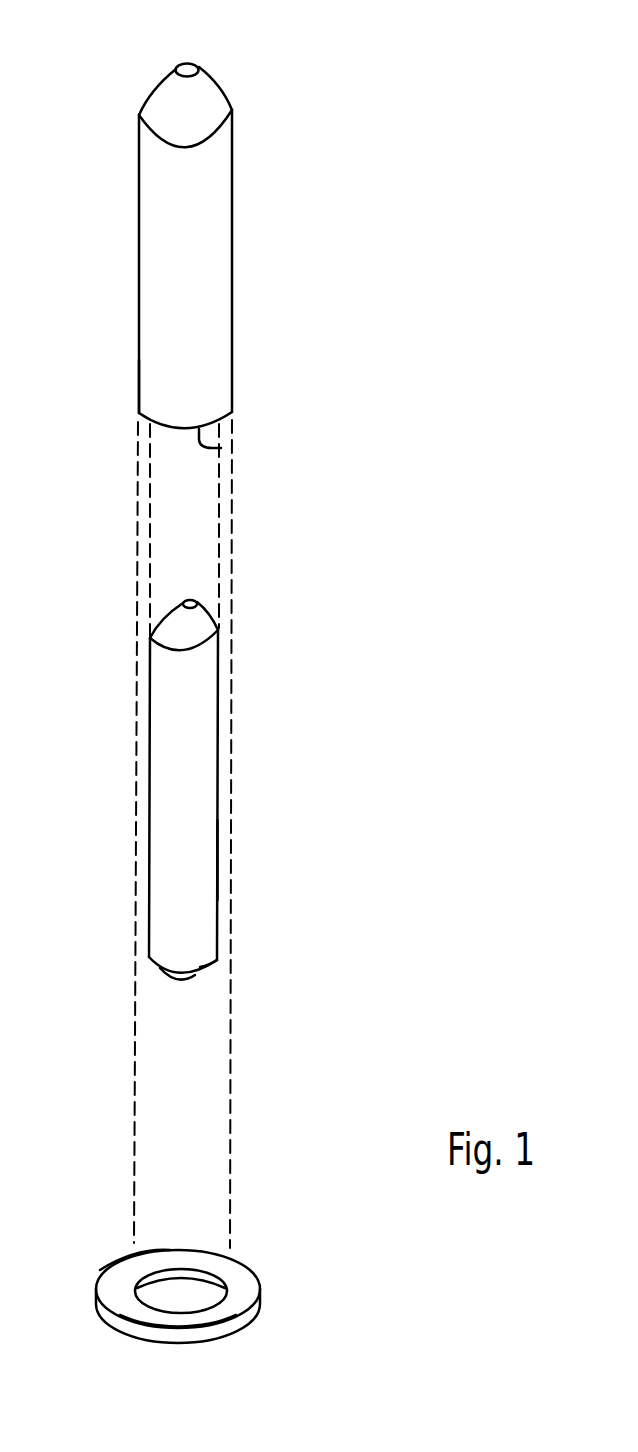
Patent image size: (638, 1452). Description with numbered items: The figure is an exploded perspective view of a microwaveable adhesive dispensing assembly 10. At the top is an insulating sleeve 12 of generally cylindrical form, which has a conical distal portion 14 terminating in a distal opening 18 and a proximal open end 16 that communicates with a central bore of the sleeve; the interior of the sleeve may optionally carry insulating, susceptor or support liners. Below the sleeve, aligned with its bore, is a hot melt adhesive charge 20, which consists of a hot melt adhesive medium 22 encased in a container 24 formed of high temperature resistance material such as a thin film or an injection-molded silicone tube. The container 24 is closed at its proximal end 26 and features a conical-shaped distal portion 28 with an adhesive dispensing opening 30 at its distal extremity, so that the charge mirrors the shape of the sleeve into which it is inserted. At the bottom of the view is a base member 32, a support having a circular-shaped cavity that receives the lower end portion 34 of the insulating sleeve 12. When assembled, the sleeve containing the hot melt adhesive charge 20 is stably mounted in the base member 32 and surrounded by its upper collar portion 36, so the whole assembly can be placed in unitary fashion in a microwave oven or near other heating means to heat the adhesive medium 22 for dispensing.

The microwaveable adhesive dispensing assembly 10 is at (244, 529).
The insulating sleeve 12 is at (215, 198).
The conical distal portion 14 is at (210, 101).
The proximal open end 16 is at (220, 448).
The distal opening 18 is at (185, 62).
The hot melt adhesive charge 20 is at (218, 862).
The hot melt adhesive medium 22 is at (202, 743).
The container 24 is at (207, 953).
The proximal end 26 is at (185, 973).
The conical-shaped distal portion 28 is at (197, 628).
The adhesive dispensing opening 30 is at (190, 594).
The base member 32 is at (242, 1333).
The lower end portion 34 is at (157, 382).
The upper collar portion 36 is at (117, 1268).